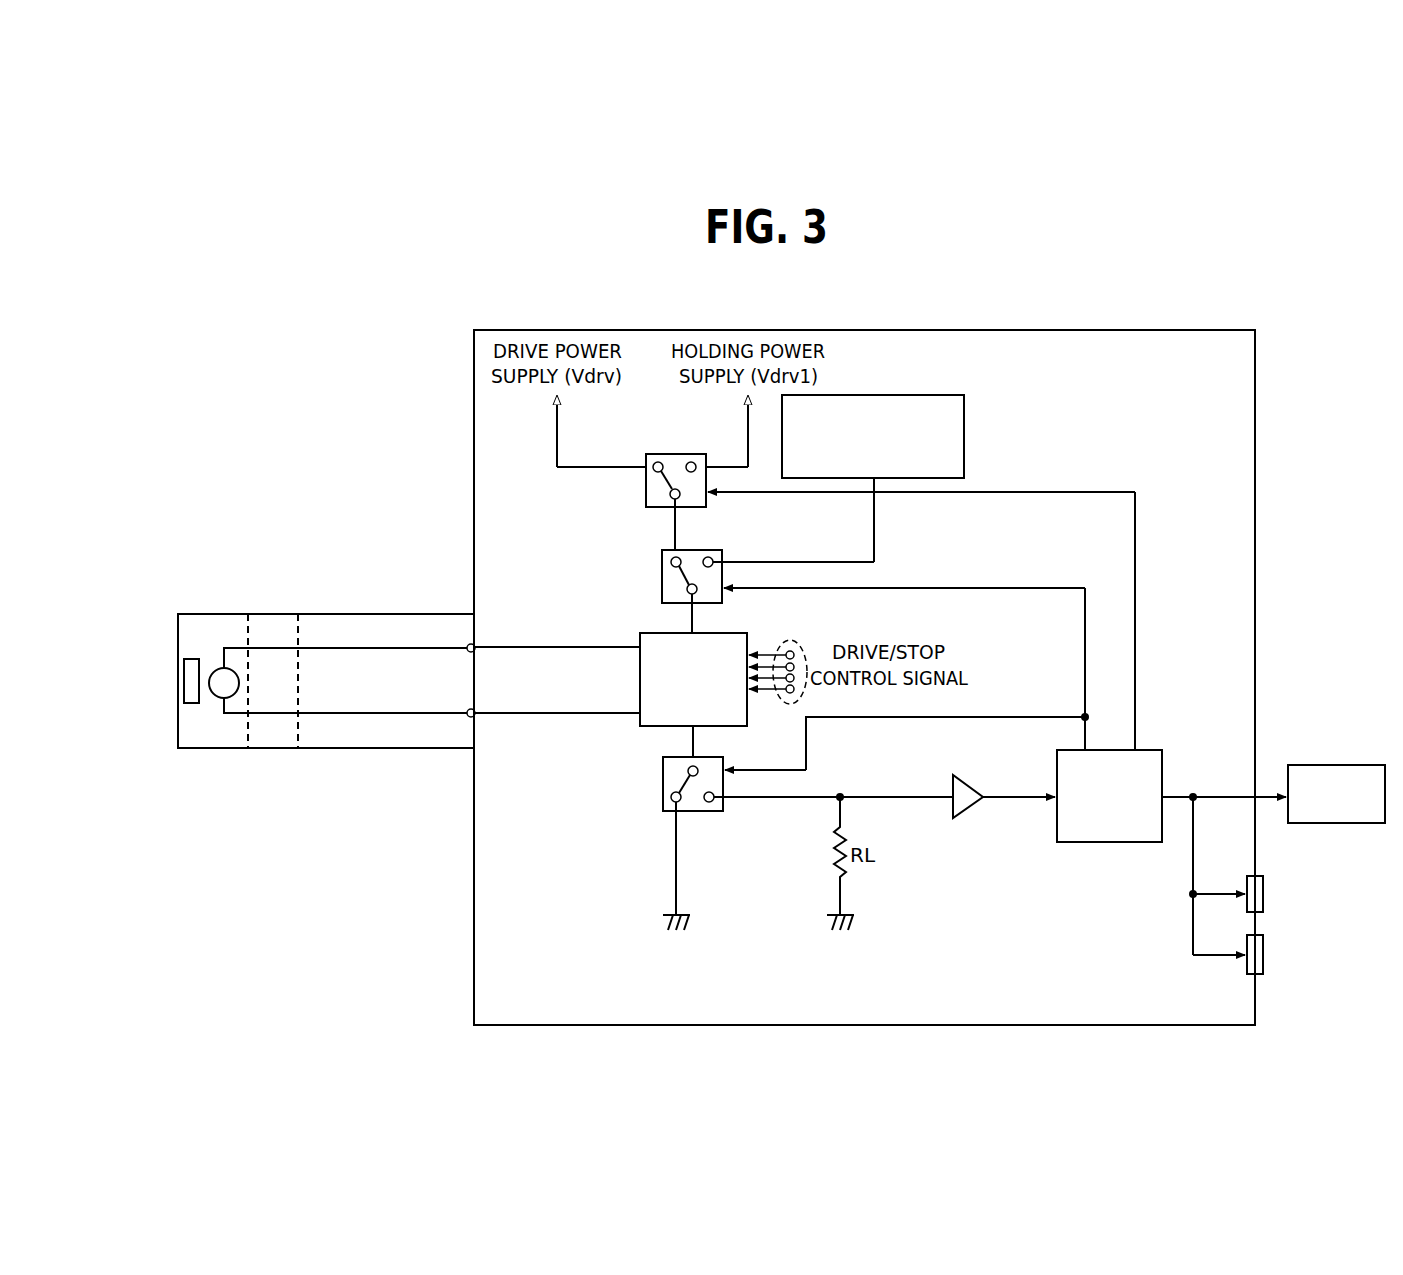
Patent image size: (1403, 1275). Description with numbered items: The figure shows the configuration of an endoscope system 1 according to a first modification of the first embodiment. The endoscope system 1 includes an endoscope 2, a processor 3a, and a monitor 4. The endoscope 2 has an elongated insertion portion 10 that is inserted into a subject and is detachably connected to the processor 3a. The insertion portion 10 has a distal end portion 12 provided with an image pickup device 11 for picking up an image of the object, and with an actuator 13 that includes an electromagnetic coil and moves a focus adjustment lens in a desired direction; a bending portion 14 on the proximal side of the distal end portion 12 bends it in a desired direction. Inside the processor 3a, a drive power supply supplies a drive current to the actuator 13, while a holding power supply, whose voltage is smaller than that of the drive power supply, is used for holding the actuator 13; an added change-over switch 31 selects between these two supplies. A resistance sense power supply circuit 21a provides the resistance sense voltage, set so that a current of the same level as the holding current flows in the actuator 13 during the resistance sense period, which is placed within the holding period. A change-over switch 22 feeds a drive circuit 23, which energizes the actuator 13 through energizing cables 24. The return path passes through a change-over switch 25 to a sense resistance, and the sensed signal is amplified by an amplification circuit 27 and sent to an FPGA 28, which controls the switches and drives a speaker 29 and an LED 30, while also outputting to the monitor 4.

The endoscope system 1 is at (1304, 296).
The endoscope 2 is at (399, 576).
The processor 3a is at (1024, 330).
The monitor 4 is at (1340, 765).
The insertion portion 10 is at (272, 790).
The image pickup device 11 is at (192, 659).
The distal end portion 12 is at (193, 614).
The actuator 13 is at (213, 697).
The bending portion 14 is at (272, 614).
The resistance sense power supply circuit 21a is at (895, 395).
The change-over switch 22 is at (722, 550).
The drive circuit 23 is at (747, 633).
The energizing cables 24 is at (531, 645).
The change-over switch 25 is at (723, 757).
The amplification circuit 27 is at (970, 780).
The FPGA 28 is at (1162, 750).
The speaker 29 is at (1263, 884).
The LED 30 is at (1263, 944).
The change-over switch 31 is at (676, 454).